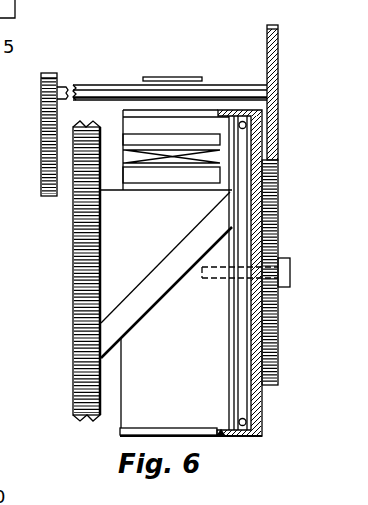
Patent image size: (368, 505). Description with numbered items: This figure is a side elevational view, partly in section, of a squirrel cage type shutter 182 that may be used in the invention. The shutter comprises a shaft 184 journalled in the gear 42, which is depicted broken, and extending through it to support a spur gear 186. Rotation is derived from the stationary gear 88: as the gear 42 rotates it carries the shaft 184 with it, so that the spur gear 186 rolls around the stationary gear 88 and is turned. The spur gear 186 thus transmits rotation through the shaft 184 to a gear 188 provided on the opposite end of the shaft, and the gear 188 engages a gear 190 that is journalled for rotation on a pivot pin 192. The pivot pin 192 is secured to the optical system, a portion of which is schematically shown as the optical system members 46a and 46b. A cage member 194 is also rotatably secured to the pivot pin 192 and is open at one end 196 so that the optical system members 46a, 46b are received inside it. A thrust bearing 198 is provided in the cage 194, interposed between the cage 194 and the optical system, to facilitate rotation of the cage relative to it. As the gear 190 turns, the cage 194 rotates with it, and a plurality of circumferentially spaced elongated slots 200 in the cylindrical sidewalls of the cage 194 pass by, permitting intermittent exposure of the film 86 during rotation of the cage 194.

The gear 42 is at (73, 345).
The optical system member 46a is at (112, 277).
The optical system member 46b is at (213, 176).
The film 86 is at (159, 78).
The stationary gear 88 is at (41, 148).
The squirrel cage type shutter 182 is at (218, 187).
The shaft 184 is at (91, 86).
The spur gear 186 is at (48, 72).
The gear 188 is at (278, 35).
The gear 190 is at (268, 363).
The pivot pin 192 is at (290, 272).
The cage member 194 is at (261, 430).
The open end 196 is at (148, 428).
The thrust bearing 198 is at (238, 411).
The elongated slots 200 is at (218, 114).